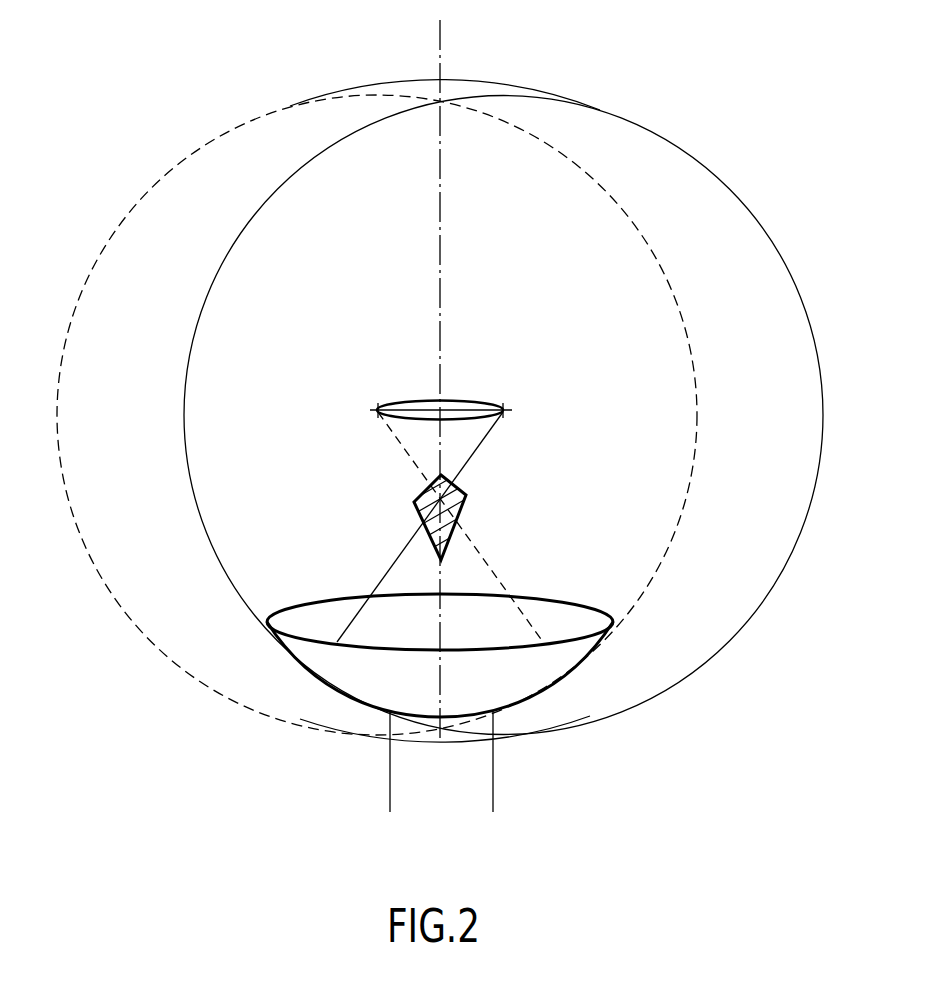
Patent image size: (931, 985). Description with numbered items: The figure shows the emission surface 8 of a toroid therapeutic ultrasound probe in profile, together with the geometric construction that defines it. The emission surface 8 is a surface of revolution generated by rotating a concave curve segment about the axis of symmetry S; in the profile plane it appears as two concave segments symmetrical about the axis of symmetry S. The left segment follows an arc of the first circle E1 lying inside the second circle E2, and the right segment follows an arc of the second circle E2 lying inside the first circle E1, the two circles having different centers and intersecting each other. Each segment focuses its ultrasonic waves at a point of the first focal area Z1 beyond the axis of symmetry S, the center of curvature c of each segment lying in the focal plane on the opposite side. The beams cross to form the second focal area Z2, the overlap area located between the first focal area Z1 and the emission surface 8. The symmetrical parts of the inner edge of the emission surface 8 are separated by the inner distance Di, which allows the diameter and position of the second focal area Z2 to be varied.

The axis of symmetry S is at (440, 30).
The first circle E1 is at (184, 419).
The second circle E2 is at (697, 406).
The first focal area Z1 is at (455, 400).
The second focal area Z2 is at (458, 505).
The center of curvature c is at (378, 408).
The emission surface 8 is at (597, 651).
The inner distance Di is at (493, 800).